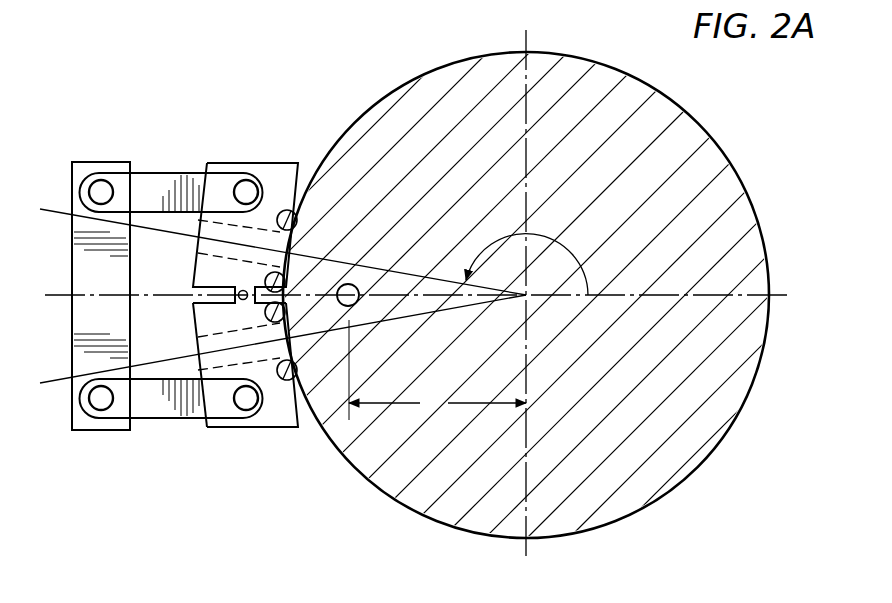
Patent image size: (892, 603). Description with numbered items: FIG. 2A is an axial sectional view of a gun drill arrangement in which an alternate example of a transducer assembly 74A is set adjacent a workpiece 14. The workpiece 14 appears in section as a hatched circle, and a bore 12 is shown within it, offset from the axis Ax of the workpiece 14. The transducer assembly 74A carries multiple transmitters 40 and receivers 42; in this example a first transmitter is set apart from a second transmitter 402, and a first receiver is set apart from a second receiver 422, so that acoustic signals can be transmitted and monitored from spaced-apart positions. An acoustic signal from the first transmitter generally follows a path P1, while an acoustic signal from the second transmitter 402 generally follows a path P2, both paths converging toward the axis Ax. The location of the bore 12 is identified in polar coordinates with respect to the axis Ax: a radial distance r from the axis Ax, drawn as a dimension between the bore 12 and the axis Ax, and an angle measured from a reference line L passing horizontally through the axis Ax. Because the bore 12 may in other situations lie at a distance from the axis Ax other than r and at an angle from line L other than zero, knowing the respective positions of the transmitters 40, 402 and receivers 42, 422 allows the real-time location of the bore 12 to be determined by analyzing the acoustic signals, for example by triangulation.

The bore 12 is at (353, 280).
The workpiece 14 is at (670, 140).
The transmitter 40 is at (243, 198).
The receiver 42 is at (219, 228).
The transmitter 402 is at (234, 403).
The receiver 422 is at (222, 355).
The transducer assembly 74A is at (133, 457).
The path P1 is at (422, 275).
The path P2 is at (424, 315).
The line L is at (727, 293).
The axis Ax is at (532, 300).
The radial distance r is at (437, 370).